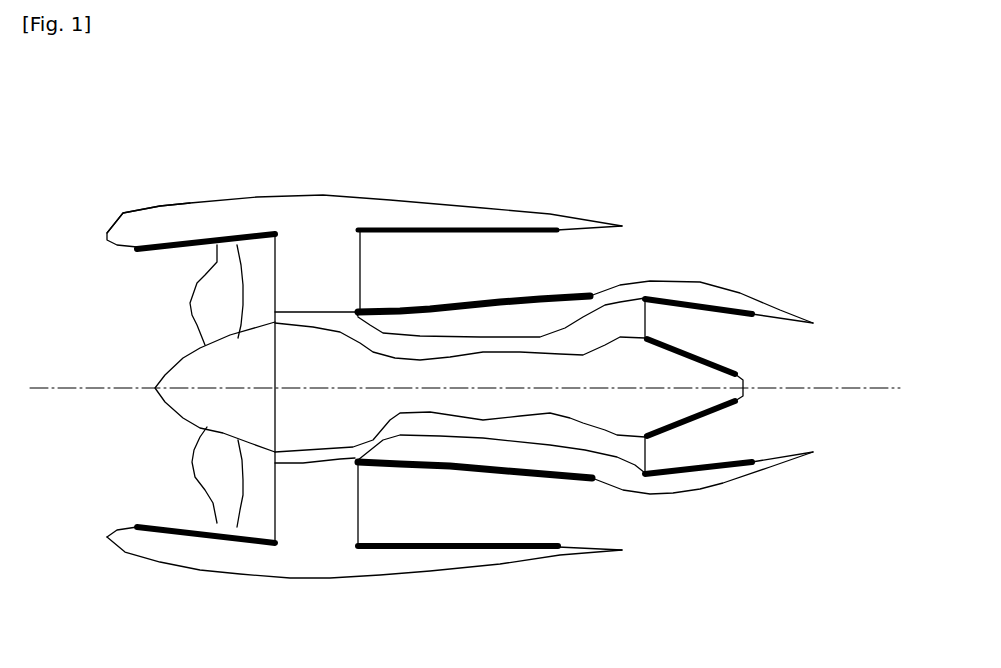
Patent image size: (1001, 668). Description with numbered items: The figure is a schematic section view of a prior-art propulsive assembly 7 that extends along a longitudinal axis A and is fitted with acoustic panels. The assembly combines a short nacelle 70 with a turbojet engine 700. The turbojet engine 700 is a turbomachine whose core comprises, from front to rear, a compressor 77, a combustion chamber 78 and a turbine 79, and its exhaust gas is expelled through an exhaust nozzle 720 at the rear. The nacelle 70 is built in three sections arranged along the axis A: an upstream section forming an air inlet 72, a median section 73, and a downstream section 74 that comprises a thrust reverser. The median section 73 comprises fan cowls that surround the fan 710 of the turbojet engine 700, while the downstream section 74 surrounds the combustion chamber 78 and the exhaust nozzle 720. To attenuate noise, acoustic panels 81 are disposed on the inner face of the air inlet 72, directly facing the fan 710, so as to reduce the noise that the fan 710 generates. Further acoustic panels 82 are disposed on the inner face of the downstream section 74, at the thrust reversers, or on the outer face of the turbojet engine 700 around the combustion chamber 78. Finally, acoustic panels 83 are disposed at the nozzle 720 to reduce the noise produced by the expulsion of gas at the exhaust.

The propulsive assembly 7 is at (855, 182).
The short nacelle 70 is at (335, 118).
The air inlet 72 is at (149, 185).
The median section 73 is at (364, 174).
The downstream section 74 is at (593, 336).
The compressor 77 is at (316, 483).
The combustion chamber 78 is at (400, 483).
The turbine 79 is at (585, 462).
The acoustic panels 81 is at (185, 289).
The acoustic panels 82 is at (475, 388).
The acoustic panels 83 is at (729, 386).
The turbojet engine 700 is at (542, 300).
The fan 710 is at (175, 388).
The exhaust nozzle 720 is at (825, 433).
The longitudinal axis A is at (481, 345).